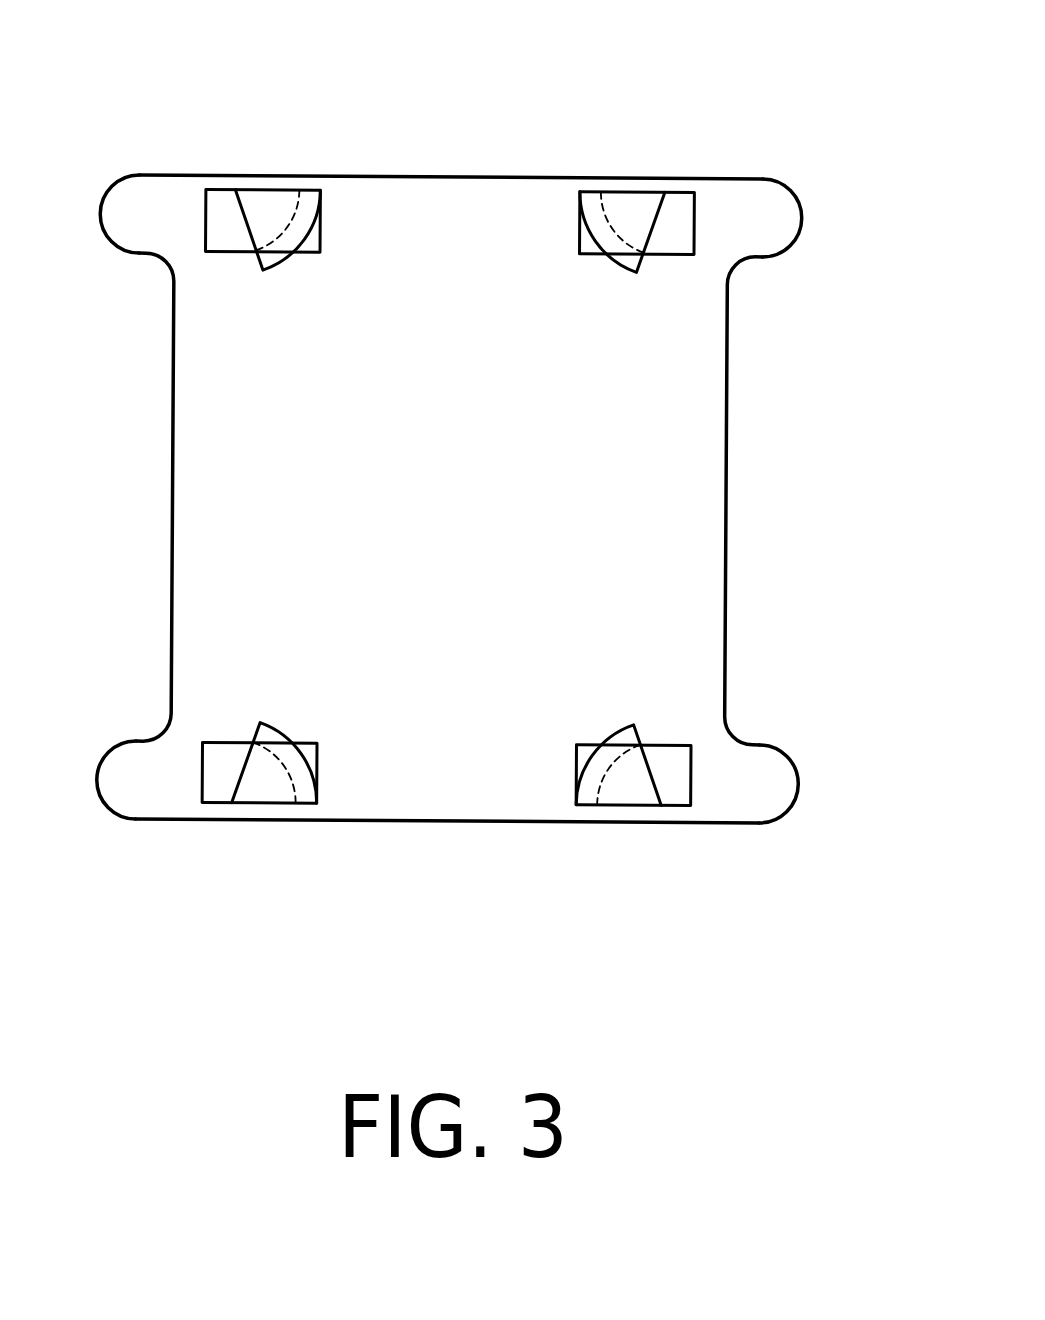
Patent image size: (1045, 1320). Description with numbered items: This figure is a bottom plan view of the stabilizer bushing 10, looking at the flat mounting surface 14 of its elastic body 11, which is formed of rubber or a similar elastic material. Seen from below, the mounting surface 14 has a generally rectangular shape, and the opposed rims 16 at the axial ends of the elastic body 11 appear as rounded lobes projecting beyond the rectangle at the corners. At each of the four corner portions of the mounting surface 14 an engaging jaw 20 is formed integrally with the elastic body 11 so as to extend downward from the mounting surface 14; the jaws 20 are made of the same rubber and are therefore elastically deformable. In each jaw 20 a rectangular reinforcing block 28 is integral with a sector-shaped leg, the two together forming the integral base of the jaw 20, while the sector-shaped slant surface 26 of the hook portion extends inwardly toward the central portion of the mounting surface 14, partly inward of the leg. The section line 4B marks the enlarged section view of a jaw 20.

The stabilizer bushing 10 is at (486, 483).
The elastic body 11 is at (655, 455).
The flat mounting surface 14 is at (477, 490).
The opposed rims 16 is at (770, 220).
The engaging jaw 20 is at (446, 495).
The slant surface 26 is at (277, 217).
The reinforcing block 28 is at (223, 222).
The section line 4B- 4B is at (307, 745).